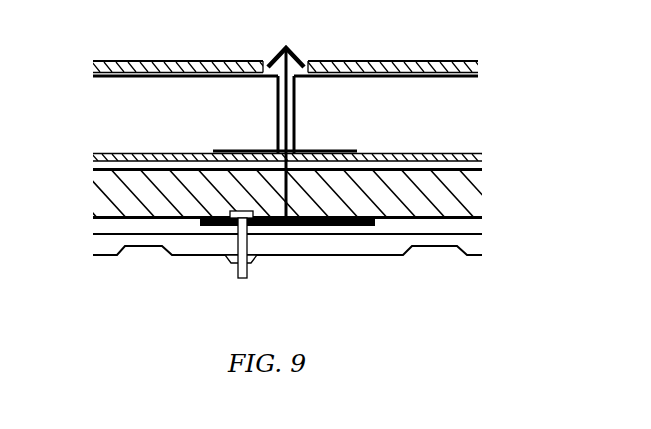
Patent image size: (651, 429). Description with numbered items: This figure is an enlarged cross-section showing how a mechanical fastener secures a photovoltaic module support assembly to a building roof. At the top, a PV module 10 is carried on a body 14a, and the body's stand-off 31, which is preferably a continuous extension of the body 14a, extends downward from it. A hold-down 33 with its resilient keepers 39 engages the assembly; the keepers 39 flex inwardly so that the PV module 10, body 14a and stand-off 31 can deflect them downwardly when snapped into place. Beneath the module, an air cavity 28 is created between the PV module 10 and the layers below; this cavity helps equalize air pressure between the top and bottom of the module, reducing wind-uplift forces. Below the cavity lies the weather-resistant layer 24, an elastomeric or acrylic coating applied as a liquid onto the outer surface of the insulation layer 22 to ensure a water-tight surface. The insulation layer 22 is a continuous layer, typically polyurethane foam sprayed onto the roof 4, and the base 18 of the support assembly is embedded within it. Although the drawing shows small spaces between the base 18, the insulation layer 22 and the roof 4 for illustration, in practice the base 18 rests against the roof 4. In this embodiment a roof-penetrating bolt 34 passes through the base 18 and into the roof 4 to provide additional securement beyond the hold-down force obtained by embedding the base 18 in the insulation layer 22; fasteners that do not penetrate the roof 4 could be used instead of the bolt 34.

The PV module 10 is at (288, 45).
The body 14a is at (405, 96).
The air cavity 28 is at (411, 121).
The weather-resistant layer 24 is at (292, 140).
The insulation layer 22 is at (299, 193).
The roof 4 is at (310, 252).
The base 18 is at (312, 263).
The roof-penetrating bolt 34 is at (218, 259).
The stand-off 31 is at (325, 114).
The hold-down 33 is at (239, 114).
The resilient keeper 39 is at (262, 116).